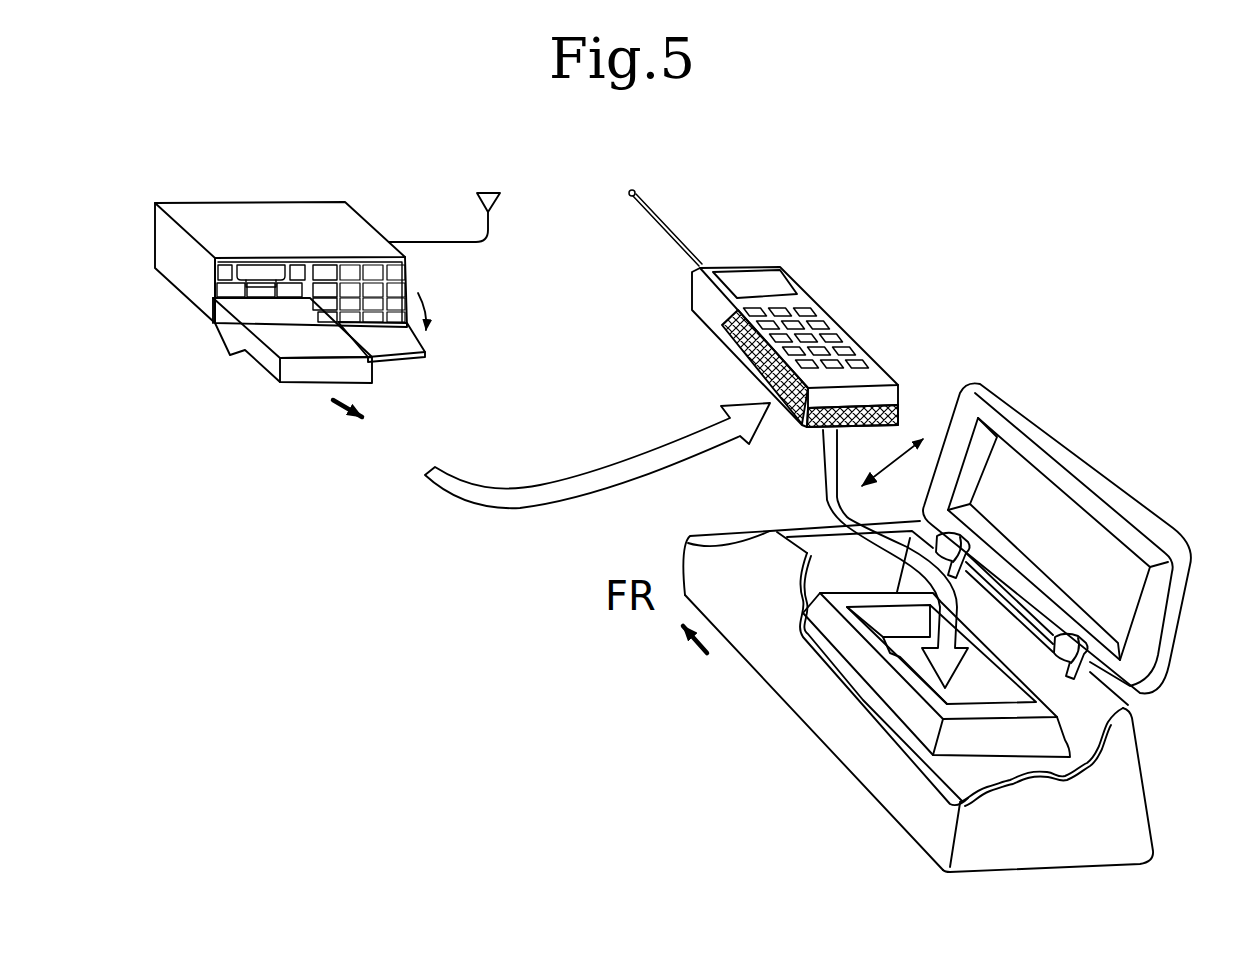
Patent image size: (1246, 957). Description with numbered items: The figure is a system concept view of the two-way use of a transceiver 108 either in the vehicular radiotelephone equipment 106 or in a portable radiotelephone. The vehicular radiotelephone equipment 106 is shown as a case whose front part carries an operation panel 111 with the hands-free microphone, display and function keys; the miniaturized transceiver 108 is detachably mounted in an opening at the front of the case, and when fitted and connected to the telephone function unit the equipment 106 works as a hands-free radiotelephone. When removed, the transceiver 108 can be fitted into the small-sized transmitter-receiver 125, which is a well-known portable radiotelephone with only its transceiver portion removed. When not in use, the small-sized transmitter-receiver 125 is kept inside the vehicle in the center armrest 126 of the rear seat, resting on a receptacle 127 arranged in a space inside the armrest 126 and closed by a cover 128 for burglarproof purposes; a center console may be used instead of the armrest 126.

The vehicular radiotelephone equipment 106 is at (433, 292).
The transceiver 108 is at (298, 375).
The operation panel 111 is at (319, 256).
The small-sized transmitter-receiver 125 is at (847, 333).
The center armrest 126 is at (918, 713).
The receptacle 127 is at (857, 660).
The cover 128 is at (1120, 507).